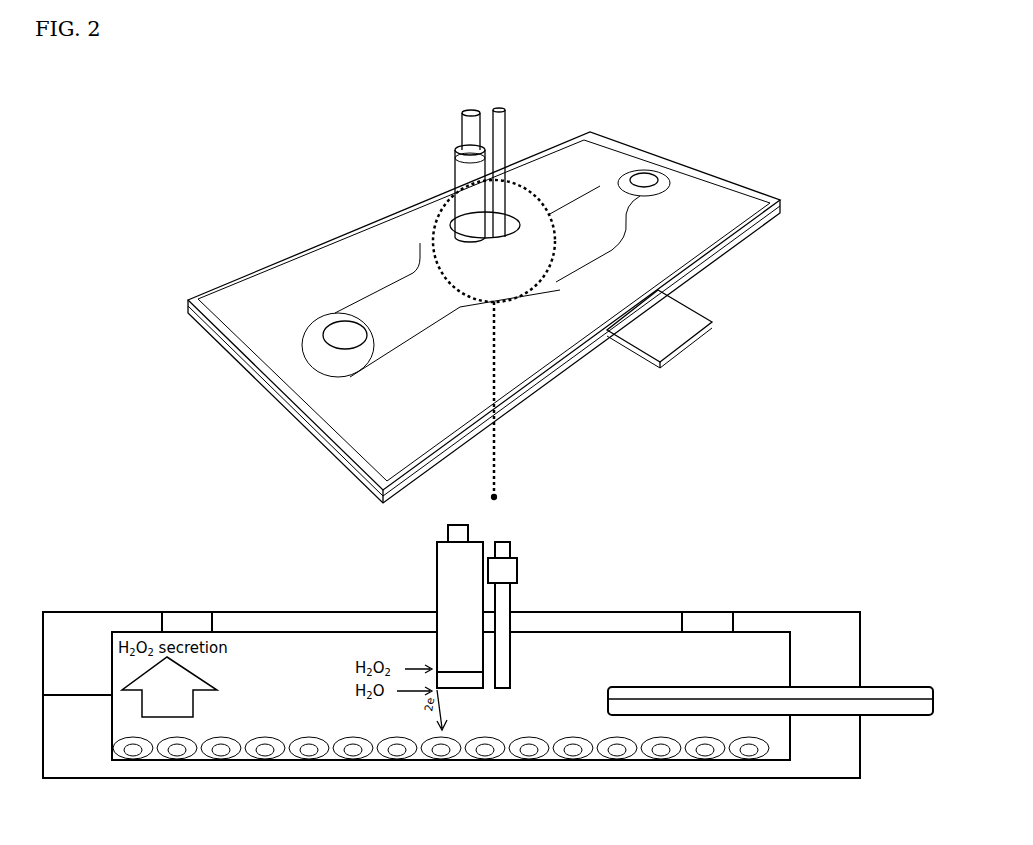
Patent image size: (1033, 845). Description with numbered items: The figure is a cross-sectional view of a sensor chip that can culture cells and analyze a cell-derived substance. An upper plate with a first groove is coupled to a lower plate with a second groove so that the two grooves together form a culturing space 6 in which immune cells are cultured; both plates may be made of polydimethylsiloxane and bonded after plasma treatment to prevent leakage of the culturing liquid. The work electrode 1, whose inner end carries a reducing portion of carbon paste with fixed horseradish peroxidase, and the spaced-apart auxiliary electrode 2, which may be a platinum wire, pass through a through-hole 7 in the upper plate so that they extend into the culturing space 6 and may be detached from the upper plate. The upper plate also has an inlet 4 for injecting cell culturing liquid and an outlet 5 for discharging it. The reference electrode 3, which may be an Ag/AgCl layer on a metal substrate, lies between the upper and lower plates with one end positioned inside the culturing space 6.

The work electrode 1 is at (430, 558).
The auxiliary electrode 2 is at (522, 562).
The reference electrode 3 is at (877, 682).
The inlet 4 is at (243, 728).
The outlet 5 is at (758, 643).
The culturing space 6 is at (725, 610).
The through-hole 7 is at (208, 608).